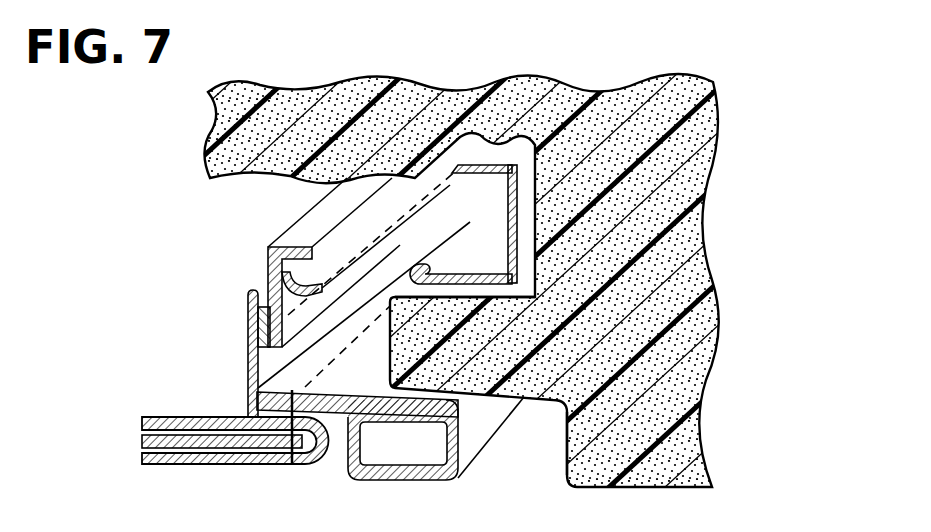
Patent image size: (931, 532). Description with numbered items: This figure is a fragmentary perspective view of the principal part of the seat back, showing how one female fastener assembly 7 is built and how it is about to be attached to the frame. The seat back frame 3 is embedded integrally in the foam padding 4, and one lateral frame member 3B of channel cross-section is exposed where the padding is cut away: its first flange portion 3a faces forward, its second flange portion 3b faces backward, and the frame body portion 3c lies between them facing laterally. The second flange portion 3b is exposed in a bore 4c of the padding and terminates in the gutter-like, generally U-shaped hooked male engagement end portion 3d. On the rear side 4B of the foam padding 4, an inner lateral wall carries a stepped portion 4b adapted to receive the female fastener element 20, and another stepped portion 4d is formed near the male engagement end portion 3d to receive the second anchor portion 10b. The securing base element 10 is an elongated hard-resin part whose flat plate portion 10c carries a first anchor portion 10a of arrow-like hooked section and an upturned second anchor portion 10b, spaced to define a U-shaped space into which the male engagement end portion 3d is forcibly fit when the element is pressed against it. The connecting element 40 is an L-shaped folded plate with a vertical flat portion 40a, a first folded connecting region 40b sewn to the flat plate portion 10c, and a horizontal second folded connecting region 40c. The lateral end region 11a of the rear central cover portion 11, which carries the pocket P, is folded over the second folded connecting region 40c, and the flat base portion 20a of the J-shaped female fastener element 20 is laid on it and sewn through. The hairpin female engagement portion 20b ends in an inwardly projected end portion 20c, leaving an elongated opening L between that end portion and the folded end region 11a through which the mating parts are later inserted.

The seat back frame 3 is at (526, 172).
The first flange portion 3a is at (497, 165).
The second flange portion 3b is at (500, 262).
The frame body portion 3c is at (512, 200).
The hooked male engagement end portion 3d is at (437, 240).
The lateral frame member 3B is at (530, 244).
The foam padding 4 is at (180, 128).
The stepped portion 4b is at (560, 410).
The bore 4c is at (521, 150).
The stepped portion 4d is at (425, 296).
The rear side of foam padding 4B is at (690, 379).
The female fastener assembly 7 is at (158, 248).
The securing base element 10 is at (315, 282).
The first anchor portion 10a is at (270, 247).
The second anchor portion 10b is at (365, 292).
The flat plate portion 10c is at (270, 283).
The rear central cover portion 11 is at (189, 468).
The lateral end region 11a is at (307, 470).
The female fastener element 20 is at (353, 369).
The flat base portion 20a is at (335, 388).
The female engagement portion 20b is at (415, 455).
The inwardly projected end portion 20c is at (370, 460).
The connecting element 40 is at (217, 403).
The vertical flat portion 40a is at (247, 397).
The first folded connecting region 40b is at (248, 310).
The second folded connecting region 40c is at (247, 470).
The elongated opening L is at (335, 437).
The pocket P is at (187, 468).